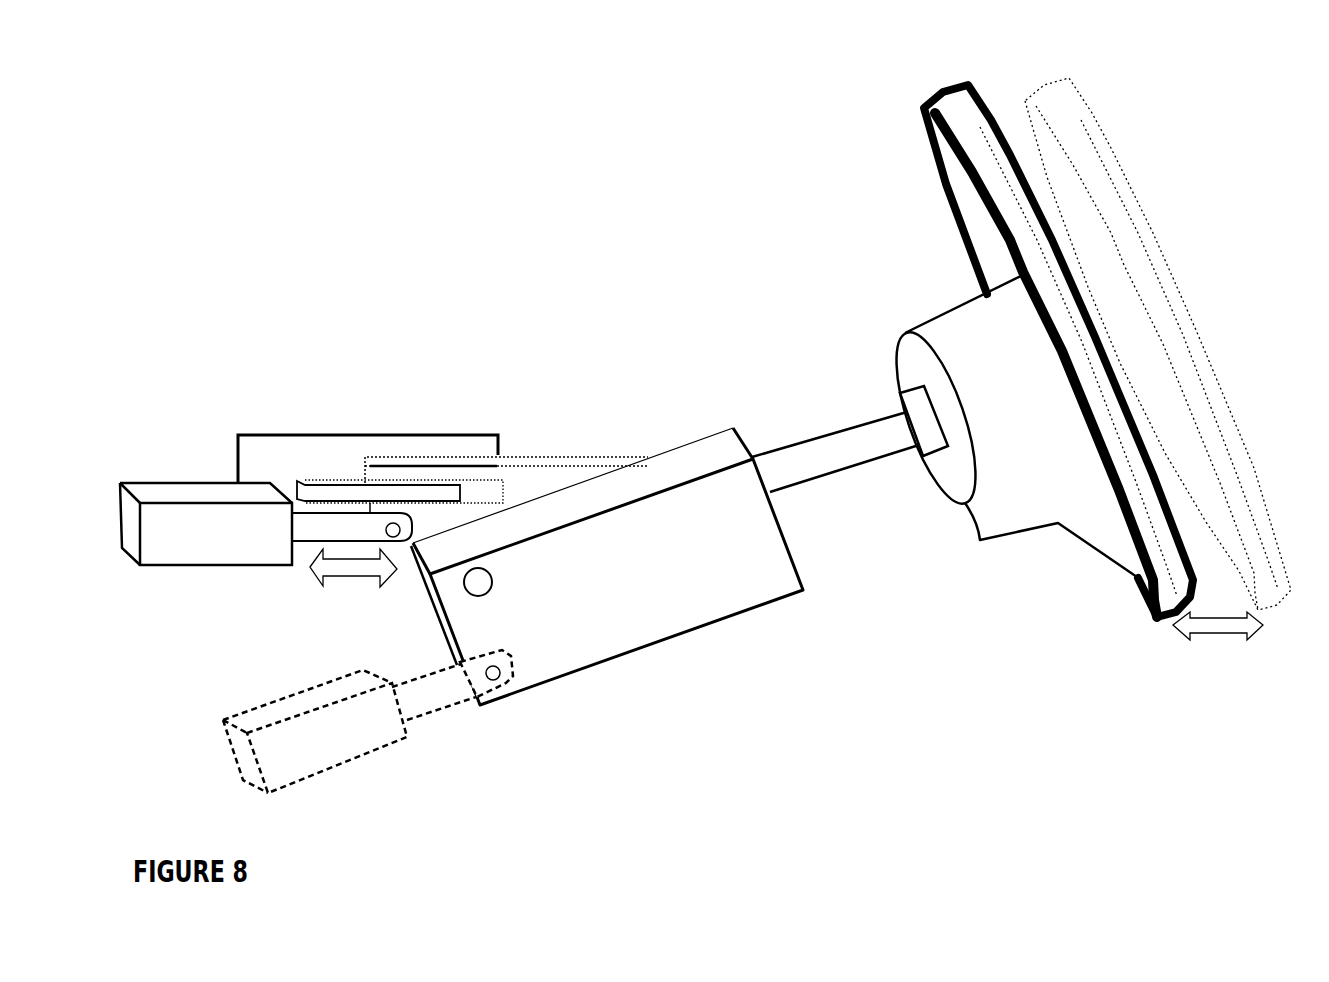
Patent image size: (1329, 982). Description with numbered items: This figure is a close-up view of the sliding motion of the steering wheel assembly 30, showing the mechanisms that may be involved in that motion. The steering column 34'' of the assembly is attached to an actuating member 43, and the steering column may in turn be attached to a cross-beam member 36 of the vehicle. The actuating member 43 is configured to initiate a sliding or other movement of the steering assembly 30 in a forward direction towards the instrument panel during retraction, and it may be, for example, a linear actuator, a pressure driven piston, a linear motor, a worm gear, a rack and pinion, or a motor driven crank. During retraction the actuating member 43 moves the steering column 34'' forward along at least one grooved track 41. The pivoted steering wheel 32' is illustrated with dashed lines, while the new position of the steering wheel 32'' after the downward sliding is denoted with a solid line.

The steering wheel assembly 30 is at (726, 334).
The steering wheel in new position 32'' is at (1058, 324).
The pivoted steering wheel 32' is at (1158, 392).
The steering column 34'' is at (607, 566).
The cross-beam member 36 is at (323, 433).
The grooved track 41 is at (493, 482).
The actuating member 43 is at (217, 483).